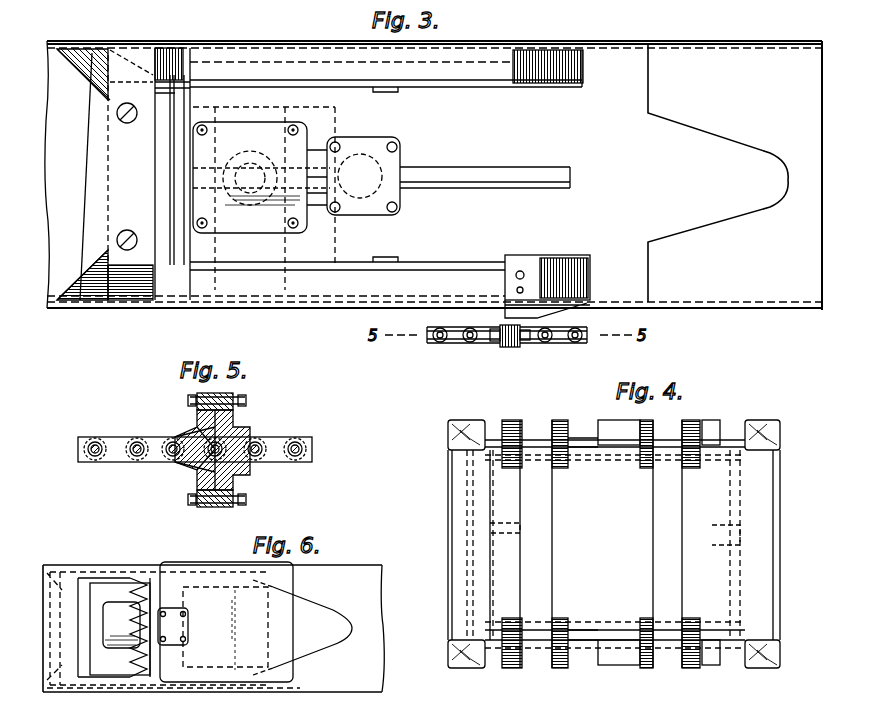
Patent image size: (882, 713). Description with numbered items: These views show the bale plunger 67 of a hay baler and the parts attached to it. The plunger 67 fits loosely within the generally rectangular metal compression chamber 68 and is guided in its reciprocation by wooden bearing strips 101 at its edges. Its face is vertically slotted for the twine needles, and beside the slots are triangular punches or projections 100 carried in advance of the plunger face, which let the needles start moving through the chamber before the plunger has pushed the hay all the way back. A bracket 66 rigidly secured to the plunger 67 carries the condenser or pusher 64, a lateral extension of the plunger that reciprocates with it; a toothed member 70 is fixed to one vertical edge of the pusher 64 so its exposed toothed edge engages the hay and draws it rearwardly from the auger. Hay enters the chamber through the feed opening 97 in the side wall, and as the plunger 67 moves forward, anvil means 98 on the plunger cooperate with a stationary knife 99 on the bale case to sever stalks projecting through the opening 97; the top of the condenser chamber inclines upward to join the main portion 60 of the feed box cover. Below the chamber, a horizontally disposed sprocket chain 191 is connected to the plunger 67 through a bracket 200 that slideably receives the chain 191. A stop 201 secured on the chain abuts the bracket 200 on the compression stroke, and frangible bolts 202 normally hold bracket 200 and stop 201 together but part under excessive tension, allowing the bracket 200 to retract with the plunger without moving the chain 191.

In FIG. 6, the main portion of the feed box cover 60 is at (122, 626).
In FIG. 6, the condenser or pusher 64 is at (133, 572).
In FIG. 3, the bracket 66 is at (275, 150).
In FIG. 3, the plunger 67 is at (268, 107).
In FIG. 6, the plunger 67 is at (50, 684).
In FIG. 4, the plunger 67 is at (603, 540).
In FIG. 3, the compression chamber 68 is at (582, 105).
In FIG. 6, the compression chamber 68 is at (345, 575).
In FIG. 6, the toothed member 70 is at (135, 585).
In FIG. 6, the feed opening 97 is at (90, 583).
In FIG. 3, the anvil means 98 is at (84, 166).
In FIG. 6, the stationary knife 99 is at (53, 570).
In FIG. 3, the punches or projections 100 is at (82, 74).
In FIG. 4, the punches or projections 100 is at (522, 430).
In FIG. 3, the wooden bearing strips 101 is at (438, 75).
In FIG. 4, the wooden bearing strips 101 is at (462, 422).
In FIG. 3, the sprocket chain 191 is at (440, 345).
In FIG. 5, the sprocket chain 191 is at (117, 437).
In FIG. 3, the bracket 200 is at (578, 258).
In FIG. 5, the bracket 200 is at (235, 478).
In FIG. 3, the stop 201 is at (503, 347).
In FIG. 5, the stop 201 is at (180, 476).
In FIG. 3, the bolts 202 is at (526, 340).
In FIG. 5, the bolts 202 is at (246, 410).